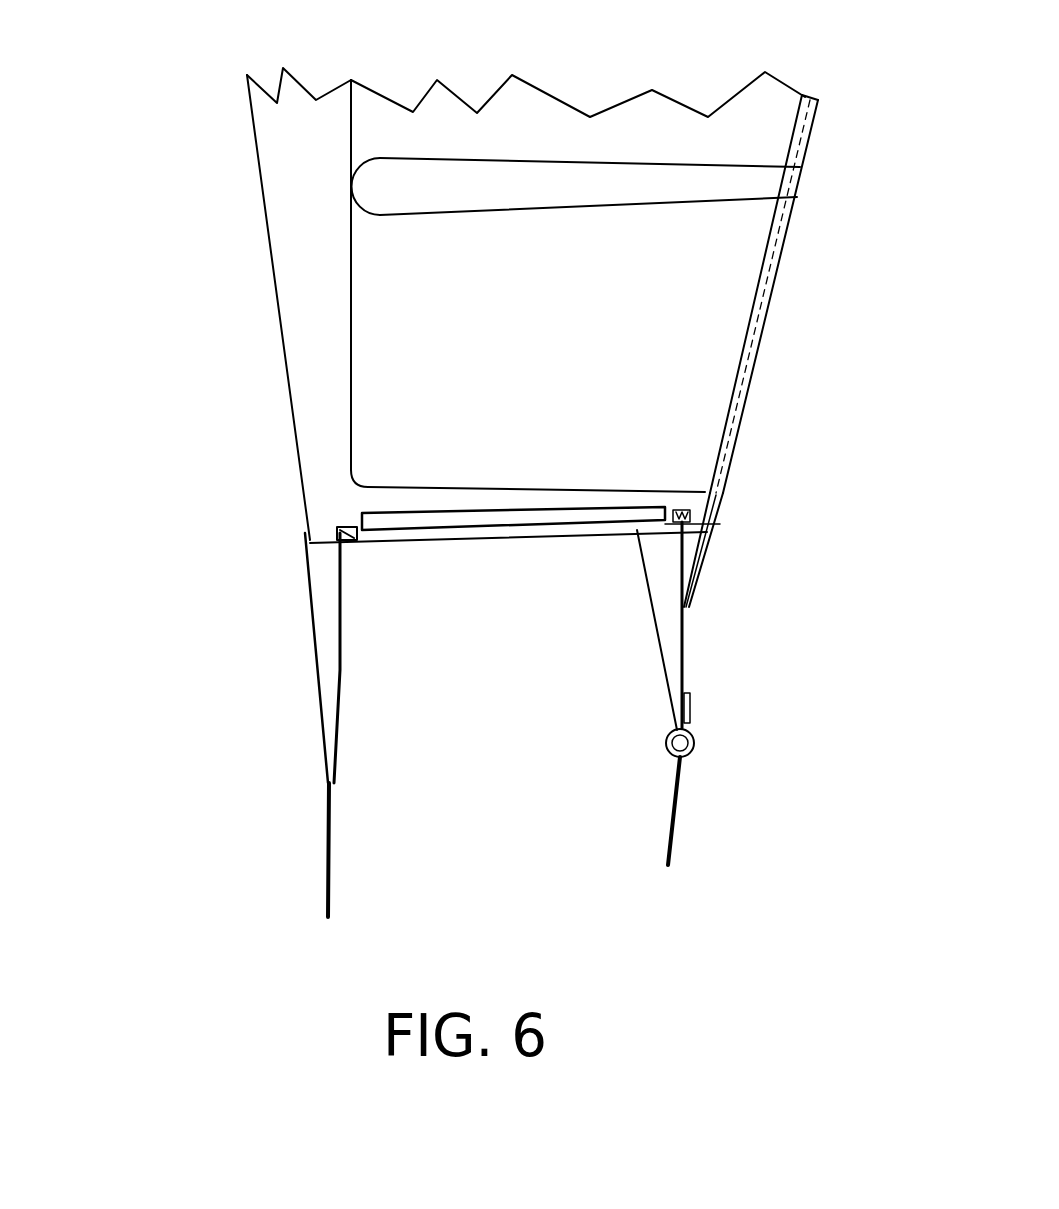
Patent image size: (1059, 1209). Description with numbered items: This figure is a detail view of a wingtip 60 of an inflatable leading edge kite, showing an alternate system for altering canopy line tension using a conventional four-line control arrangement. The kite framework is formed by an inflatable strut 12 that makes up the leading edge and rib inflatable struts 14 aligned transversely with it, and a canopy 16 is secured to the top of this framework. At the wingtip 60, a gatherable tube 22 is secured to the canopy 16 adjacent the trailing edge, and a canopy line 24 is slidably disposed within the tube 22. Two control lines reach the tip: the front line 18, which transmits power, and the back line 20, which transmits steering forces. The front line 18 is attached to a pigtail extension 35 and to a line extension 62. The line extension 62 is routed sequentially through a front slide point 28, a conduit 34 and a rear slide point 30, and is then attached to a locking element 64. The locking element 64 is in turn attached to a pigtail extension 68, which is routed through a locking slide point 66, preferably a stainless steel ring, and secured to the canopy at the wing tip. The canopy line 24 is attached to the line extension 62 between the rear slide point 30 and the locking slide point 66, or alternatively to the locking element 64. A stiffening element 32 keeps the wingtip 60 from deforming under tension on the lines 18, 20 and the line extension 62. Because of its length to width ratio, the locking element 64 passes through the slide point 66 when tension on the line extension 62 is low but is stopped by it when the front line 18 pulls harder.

The inflatable strut 12 is at (310, 212).
The rib inflatable struts 14 is at (632, 187).
The canopy 16 is at (520, 320).
The front lines 18 is at (333, 883).
The back lines 20 is at (678, 808).
The gatherable tube 22 is at (765, 325).
The canopy line 24 is at (785, 213).
The front slide point 28 is at (348, 538).
The rear slide point 30 is at (720, 524).
The stiffening element 32 is at (460, 490).
The conduit 34 is at (598, 512).
The pigtail extension 35 is at (322, 748).
The wingtip 60 is at (205, 543).
The line extension 62 is at (342, 695).
The locking element 64 is at (690, 710).
The locking slide point 66 is at (665, 743).
The pigtail extension 68 is at (643, 567).